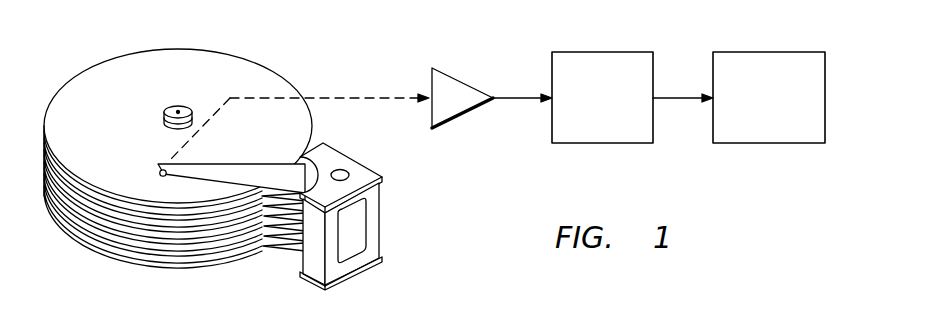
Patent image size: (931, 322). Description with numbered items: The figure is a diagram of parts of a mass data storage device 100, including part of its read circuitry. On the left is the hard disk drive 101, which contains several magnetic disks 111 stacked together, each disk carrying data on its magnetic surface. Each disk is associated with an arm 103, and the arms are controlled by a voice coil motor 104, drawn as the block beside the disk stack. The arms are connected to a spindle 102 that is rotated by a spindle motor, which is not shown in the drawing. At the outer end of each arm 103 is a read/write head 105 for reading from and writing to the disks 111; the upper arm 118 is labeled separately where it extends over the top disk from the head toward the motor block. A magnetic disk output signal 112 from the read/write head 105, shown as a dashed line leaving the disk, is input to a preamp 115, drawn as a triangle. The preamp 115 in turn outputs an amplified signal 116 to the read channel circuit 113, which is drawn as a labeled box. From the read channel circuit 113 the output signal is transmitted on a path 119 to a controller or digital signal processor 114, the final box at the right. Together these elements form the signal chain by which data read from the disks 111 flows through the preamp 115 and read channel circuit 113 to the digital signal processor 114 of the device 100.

The mass data storage device 100 is at (704, 196).
The hard disk drive 101 is at (90, 252).
The spindle 102 is at (163, 116).
The arm 103 is at (280, 256).
The voice coil motor 104 is at (381, 221).
The read/write head 105 is at (159, 171).
The magnetic disk 111 is at (150, 57).
The magnetic disk output signal 112 is at (350, 93).
The read channel circuit 113 is at (604, 146).
The digital signal processor 114 is at (770, 146).
The preamp 115 is at (462, 115).
The amplified signal 116 is at (510, 95).
The actuator arm 118 is at (246, 163).
The path 119 is at (672, 95).